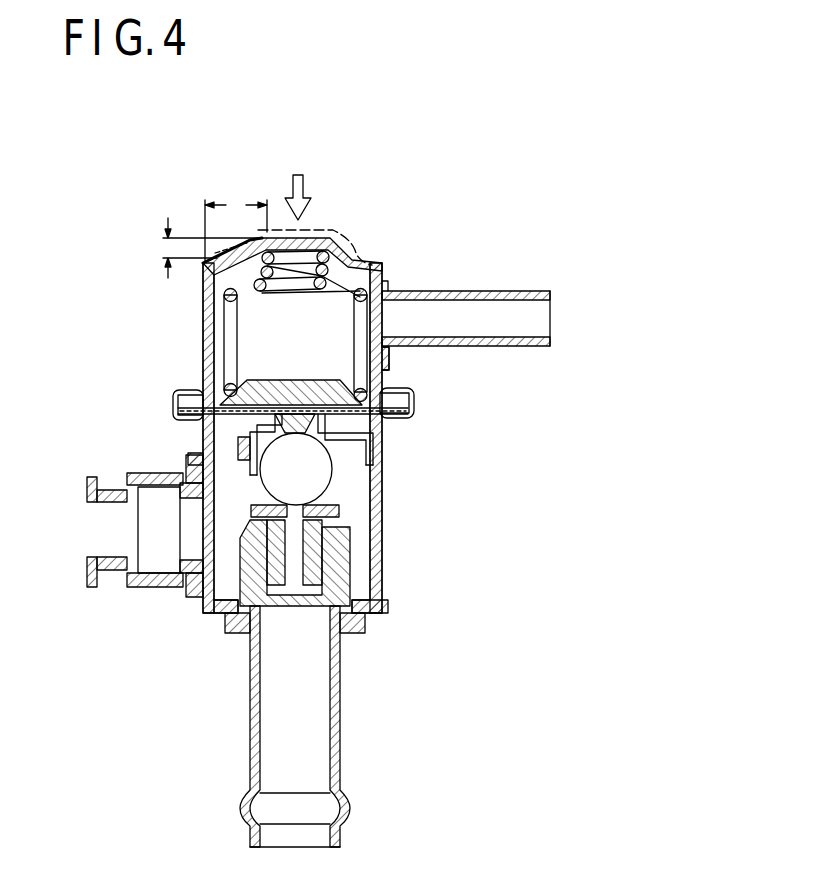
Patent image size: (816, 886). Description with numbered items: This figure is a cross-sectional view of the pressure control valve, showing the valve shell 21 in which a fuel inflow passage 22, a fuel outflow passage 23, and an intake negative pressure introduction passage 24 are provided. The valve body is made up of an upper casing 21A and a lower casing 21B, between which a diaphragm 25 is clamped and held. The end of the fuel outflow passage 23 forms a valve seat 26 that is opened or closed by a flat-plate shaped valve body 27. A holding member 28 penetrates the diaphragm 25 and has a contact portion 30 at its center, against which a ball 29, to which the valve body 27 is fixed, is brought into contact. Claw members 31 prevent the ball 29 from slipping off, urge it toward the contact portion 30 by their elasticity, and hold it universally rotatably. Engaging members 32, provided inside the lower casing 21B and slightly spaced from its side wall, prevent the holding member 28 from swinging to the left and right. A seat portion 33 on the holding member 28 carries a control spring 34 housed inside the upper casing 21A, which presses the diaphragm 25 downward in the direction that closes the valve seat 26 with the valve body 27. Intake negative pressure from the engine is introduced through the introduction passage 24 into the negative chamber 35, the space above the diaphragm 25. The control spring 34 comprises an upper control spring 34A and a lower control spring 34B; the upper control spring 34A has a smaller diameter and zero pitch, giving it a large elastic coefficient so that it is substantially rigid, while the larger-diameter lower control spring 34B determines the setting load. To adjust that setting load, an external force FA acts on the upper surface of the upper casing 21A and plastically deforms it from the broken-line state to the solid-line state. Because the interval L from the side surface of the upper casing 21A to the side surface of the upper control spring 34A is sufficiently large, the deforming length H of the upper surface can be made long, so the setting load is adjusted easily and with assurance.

The valve shell 21 is at (387, 545).
The upper casing 21A is at (222, 380).
The lower casing 21B is at (393, 593).
The fuel inflow passage 22 is at (145, 588).
The fuel outflow passage 23 is at (342, 715).
The intake negative pressure introduction passage 24 is at (495, 295).
The diaphragm 25 is at (388, 437).
The valve seat 26 is at (383, 570).
The valve body 27 is at (220, 608).
The holding member 28 is at (200, 415).
The ball 29 is at (285, 492).
The contact portion 30 is at (290, 423).
The claw members 31 is at (269, 455).
The engaging members 32 is at (385, 462).
The seat portion 33 is at (386, 385).
The control spring 34 is at (228, 372).
The upper control spring 34A is at (350, 255).
The lower control spring 34B is at (225, 297).
The negative chamber 35 is at (311, 361).
The deforming length H is at (167, 247).
The interval L is at (236, 228).
The external force FA is at (300, 176).